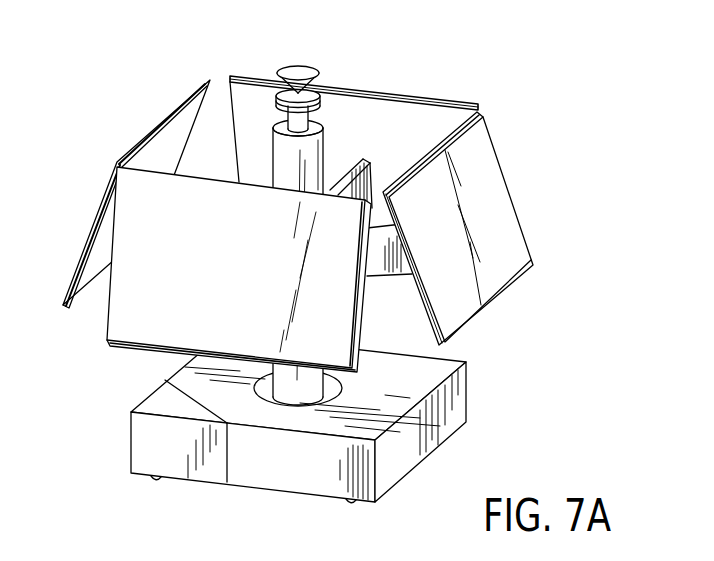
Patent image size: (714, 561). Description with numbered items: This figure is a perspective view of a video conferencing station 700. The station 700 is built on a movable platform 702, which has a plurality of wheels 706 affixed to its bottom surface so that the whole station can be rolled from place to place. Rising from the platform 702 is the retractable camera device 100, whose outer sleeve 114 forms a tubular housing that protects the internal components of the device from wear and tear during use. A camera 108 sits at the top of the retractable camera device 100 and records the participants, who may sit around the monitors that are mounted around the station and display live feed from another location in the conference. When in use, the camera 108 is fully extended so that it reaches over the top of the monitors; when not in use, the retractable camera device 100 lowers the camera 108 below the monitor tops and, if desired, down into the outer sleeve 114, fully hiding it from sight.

The video conferencing station 700 is at (310, 275).
The retractable camera device 100 is at (320, 115).
The camera 108 is at (294, 67).
The outer sleeve 114 is at (292, 163).
The movable platform 702 is at (460, 402).
The wheels 706 is at (150, 479).